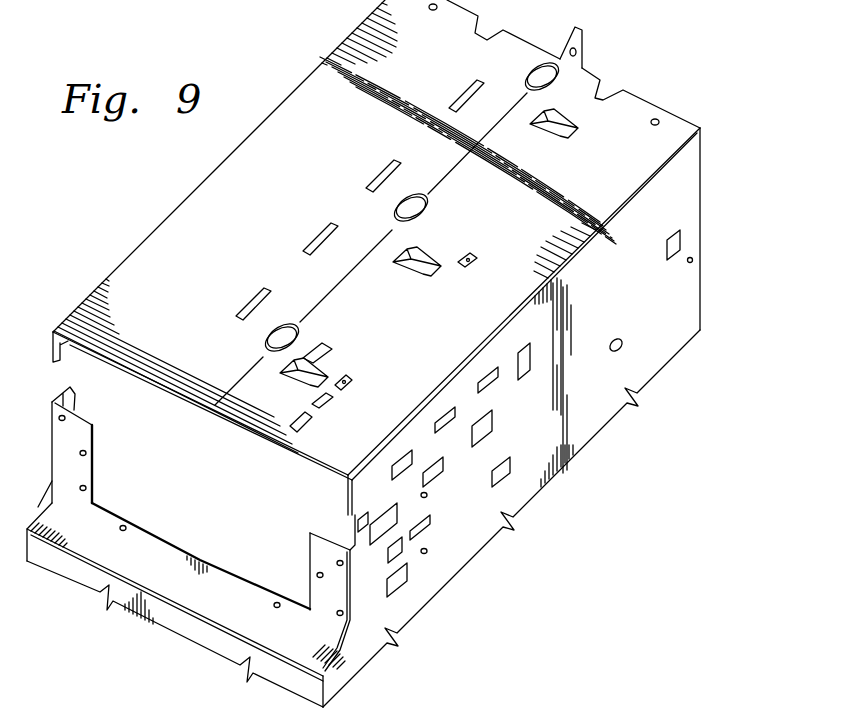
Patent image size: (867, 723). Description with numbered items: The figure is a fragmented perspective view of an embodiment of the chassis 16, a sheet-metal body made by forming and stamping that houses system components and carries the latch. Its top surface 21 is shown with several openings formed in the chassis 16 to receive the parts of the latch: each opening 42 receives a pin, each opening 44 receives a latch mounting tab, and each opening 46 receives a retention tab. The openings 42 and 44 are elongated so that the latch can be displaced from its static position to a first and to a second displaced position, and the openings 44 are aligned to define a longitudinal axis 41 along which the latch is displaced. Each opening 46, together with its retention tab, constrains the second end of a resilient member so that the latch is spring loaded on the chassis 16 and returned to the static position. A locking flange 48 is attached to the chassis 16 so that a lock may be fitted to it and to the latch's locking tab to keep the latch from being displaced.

The chassis 16 is at (383, 353).
The top surface 21 is at (312, 162).
The longitudinal axis 41 is at (240, 378).
The opening 42 is at (460, 92).
The opening 44 is at (545, 80).
The opening 46 is at (472, 256).
The locking flange 48 is at (583, 44).